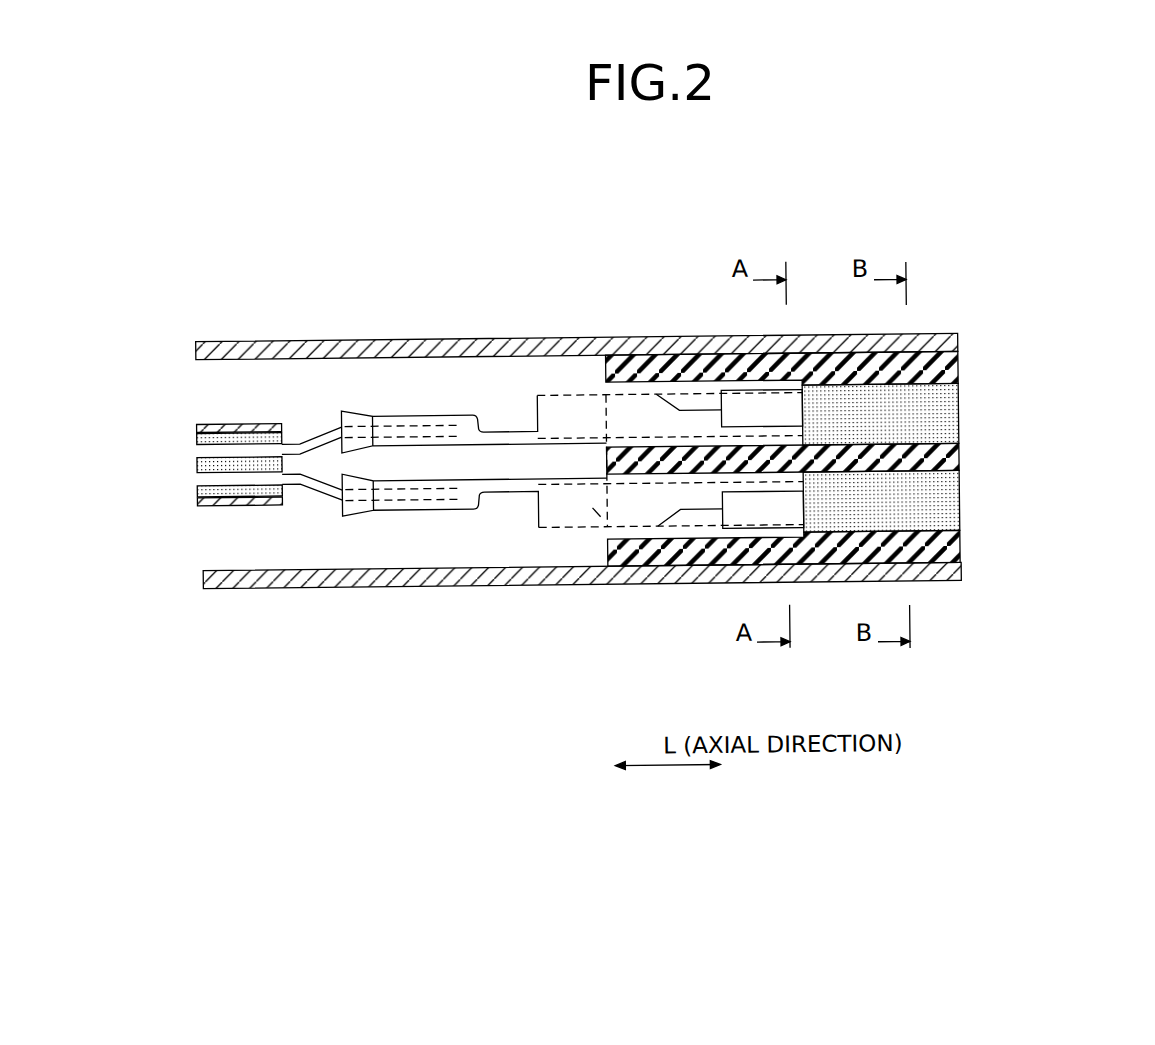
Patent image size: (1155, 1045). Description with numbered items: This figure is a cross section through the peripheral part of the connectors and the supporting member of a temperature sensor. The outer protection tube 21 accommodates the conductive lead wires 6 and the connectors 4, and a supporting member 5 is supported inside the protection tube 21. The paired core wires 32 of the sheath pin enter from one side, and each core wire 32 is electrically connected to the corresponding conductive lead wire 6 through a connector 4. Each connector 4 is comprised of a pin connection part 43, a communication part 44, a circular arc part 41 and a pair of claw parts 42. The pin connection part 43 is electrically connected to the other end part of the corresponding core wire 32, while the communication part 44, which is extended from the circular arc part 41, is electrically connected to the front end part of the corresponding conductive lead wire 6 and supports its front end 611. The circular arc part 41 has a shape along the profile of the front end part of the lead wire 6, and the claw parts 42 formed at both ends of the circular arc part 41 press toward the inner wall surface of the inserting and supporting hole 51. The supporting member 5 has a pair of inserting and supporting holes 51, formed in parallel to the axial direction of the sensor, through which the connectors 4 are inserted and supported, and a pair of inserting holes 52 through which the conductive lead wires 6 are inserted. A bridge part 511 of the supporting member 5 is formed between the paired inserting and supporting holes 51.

The protection tube 21 is at (274, 578).
The core wire 32 is at (308, 441).
The connector 4 is at (572, 487).
The circular arc part 41 is at (758, 492).
The claw part 42 is at (737, 402).
The pin connection part 43 is at (413, 492).
The communication part 44 is at (568, 508).
The supporting member 5 is at (872, 480).
The inserting and supporting hole 51 is at (683, 399).
The bridge part 511 is at (927, 462).
The inserting hole 52 is at (825, 533).
The conductive lead wire 6 is at (859, 522).
The front end 611 is at (608, 518).